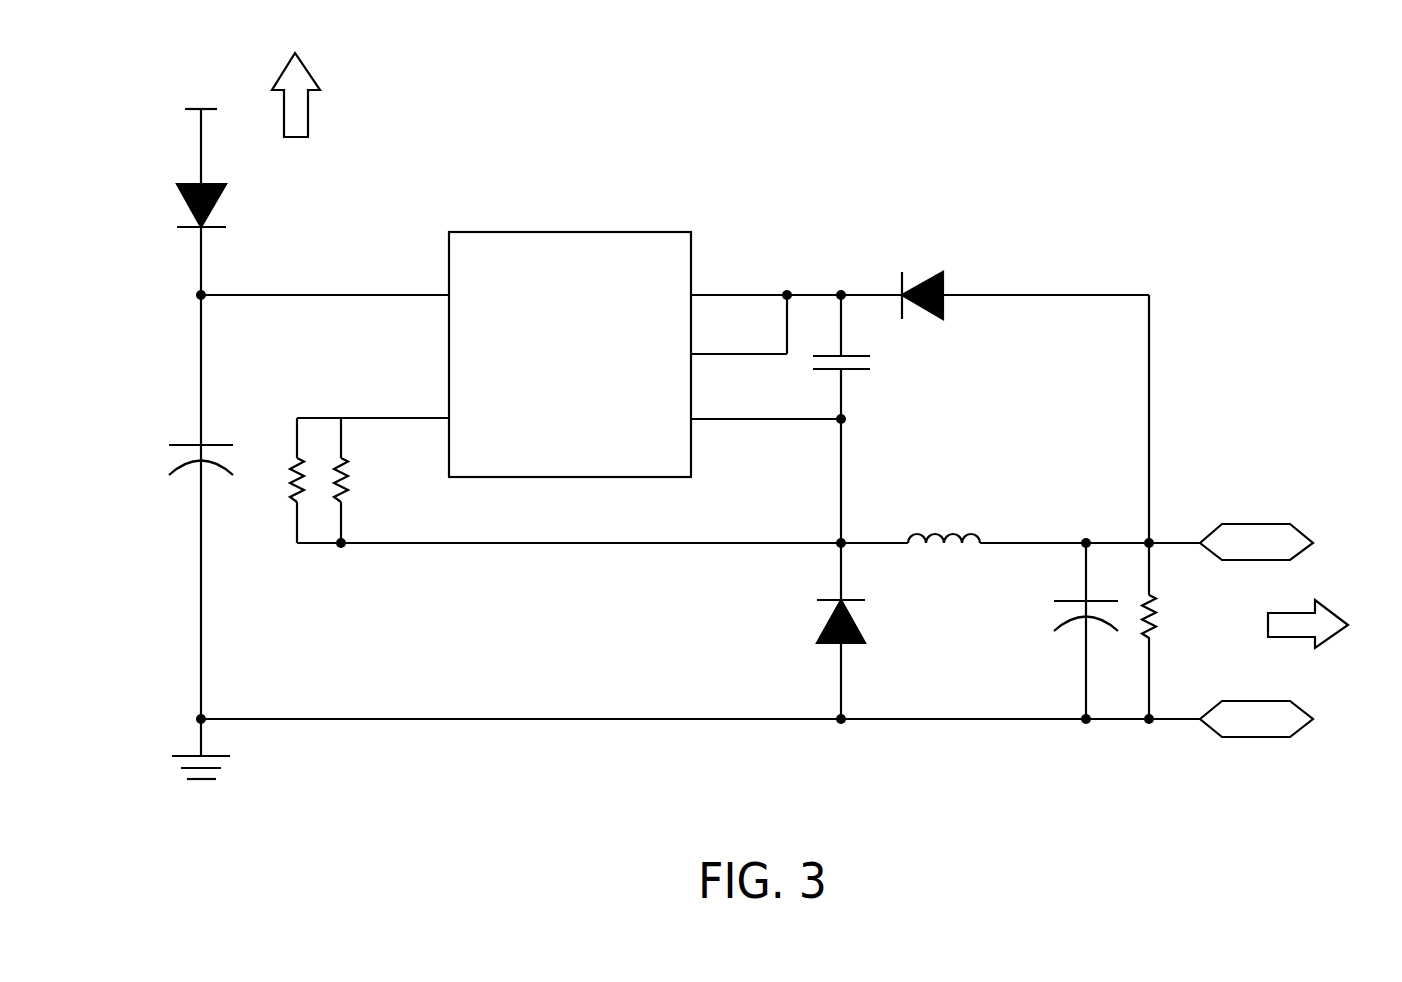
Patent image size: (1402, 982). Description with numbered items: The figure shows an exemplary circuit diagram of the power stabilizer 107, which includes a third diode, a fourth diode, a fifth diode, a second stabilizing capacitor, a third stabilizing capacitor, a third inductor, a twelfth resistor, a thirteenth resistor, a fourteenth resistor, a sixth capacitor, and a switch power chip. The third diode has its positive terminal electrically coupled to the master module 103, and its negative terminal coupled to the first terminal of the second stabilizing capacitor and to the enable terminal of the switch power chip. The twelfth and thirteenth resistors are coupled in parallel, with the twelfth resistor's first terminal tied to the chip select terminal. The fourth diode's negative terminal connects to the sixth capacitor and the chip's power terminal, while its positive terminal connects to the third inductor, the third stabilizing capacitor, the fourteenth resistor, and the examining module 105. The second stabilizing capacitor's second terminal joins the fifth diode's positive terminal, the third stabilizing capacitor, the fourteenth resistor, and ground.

The master module 103 is at (296, 78).
The examining module 105 is at (1331, 624).
The power stabilizer 107 is at (1158, 150).